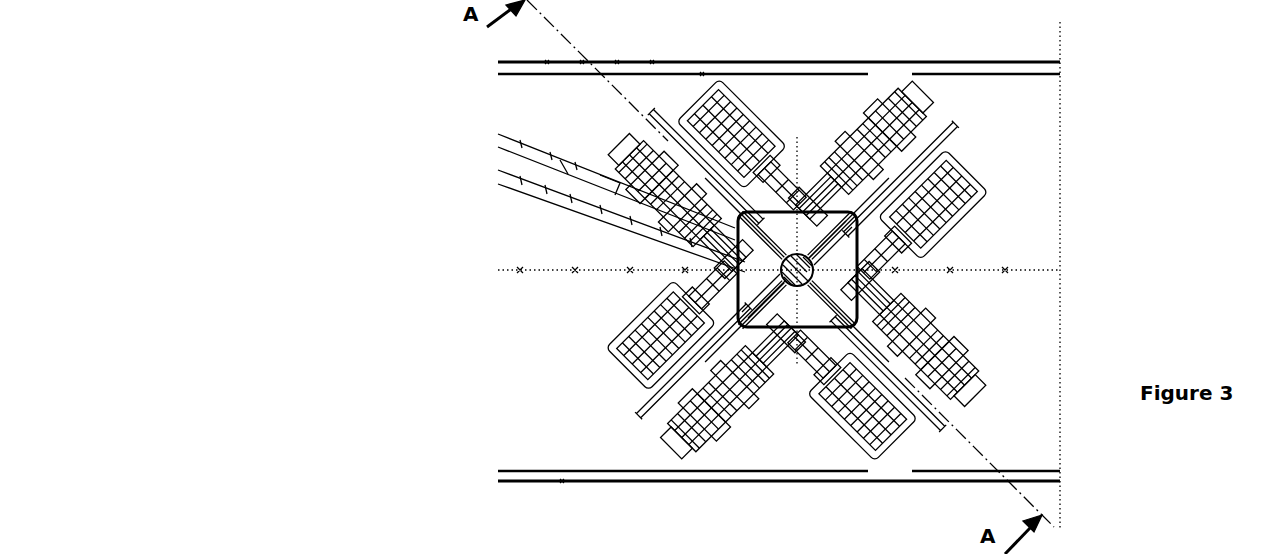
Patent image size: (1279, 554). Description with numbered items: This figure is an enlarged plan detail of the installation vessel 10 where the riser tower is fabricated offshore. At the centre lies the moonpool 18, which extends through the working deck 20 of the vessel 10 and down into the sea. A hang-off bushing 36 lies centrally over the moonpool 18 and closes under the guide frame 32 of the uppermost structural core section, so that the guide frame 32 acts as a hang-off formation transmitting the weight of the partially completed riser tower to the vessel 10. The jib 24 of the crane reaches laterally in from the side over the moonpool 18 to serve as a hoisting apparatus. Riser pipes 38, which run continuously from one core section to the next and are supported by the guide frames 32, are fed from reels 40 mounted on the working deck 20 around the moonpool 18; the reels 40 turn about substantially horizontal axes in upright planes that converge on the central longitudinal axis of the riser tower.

The installation vessel 10 is at (476, 340).
The moonpool 18 is at (803, 212).
The working deck 20 is at (1022, 211).
The jib 24 is at (547, 212).
The guide frame 32 is at (812, 277).
The hang-off bushing 36 is at (818, 233).
The riser pipes 38 is at (765, 303).
The reels 40 is at (663, 143).